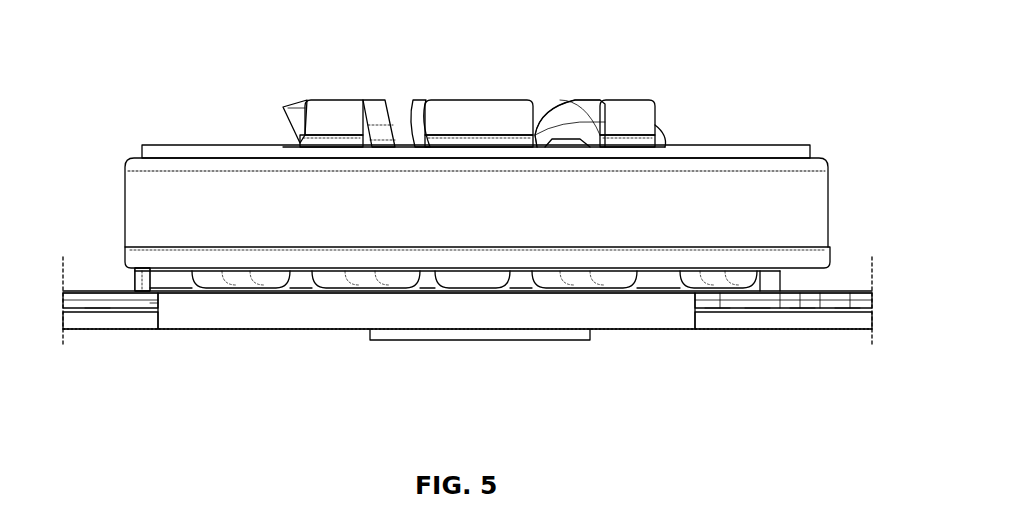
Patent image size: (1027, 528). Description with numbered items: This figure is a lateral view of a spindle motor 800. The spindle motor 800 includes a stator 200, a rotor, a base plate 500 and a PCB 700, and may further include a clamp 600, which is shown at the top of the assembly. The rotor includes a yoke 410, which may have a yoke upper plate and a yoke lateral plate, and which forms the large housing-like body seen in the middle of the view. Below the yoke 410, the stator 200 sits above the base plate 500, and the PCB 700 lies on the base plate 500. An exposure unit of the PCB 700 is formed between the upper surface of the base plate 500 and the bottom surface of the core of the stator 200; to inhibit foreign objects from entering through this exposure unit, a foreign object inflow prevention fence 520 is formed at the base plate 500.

The yoke 410 is at (825, 198).
The clamp 600 is at (472, 95).
The spindle motor 800 is at (605, 93).
The stator 200 is at (722, 282).
The base plate 500 is at (115, 320).
The foreign object inflow prevention fence 520 is at (310, 315).
The PCB 700 is at (107, 292).